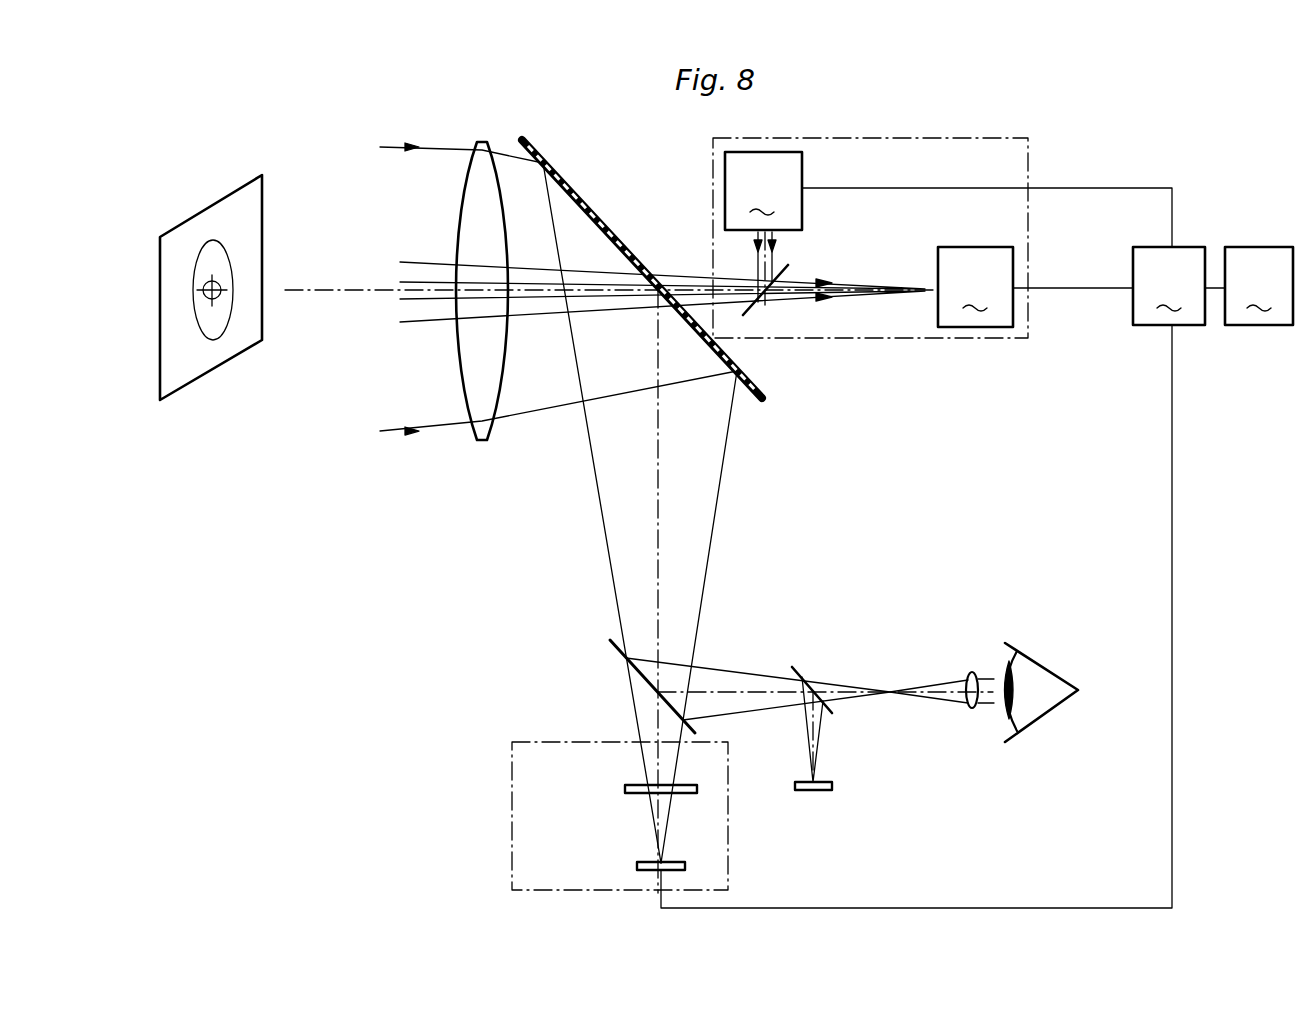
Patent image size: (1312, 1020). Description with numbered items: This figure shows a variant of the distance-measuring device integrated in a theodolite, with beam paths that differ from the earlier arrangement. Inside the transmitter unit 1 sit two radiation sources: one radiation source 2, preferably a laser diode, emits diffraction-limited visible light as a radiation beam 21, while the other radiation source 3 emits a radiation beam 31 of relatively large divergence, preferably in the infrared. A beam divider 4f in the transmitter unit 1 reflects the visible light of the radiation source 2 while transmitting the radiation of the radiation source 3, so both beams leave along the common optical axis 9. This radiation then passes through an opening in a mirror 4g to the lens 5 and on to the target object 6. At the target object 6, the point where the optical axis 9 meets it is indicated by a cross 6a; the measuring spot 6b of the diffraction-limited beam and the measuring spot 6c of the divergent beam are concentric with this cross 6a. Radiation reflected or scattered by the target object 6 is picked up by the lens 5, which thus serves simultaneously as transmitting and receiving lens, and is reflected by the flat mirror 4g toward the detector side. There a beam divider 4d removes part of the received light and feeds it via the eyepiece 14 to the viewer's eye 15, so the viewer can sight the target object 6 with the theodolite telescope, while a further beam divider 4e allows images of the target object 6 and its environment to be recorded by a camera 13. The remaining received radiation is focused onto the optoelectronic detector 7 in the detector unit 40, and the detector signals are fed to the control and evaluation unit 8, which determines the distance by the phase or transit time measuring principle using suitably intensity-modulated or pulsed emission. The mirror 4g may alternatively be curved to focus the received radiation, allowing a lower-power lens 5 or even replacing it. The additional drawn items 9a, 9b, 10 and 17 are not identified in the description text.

The transmitter unit 1 is at (1030, 153).
The radiation source 2 is at (948, 199).
The radiation source 3 is at (1035, 287).
The beam divider 4d is at (652, 686).
The beam divider 4e is at (798, 668).
The beam divider 4f is at (788, 267).
The mirror 4g is at (590, 208).
The lens 5 is at (463, 201).
The target object 6 is at (204, 213).
The cross 6a is at (212, 278).
The measuring spot 6b is at (213, 299).
The measuring spot 6c is at (208, 336).
The optoelectronic detector 7 is at (642, 860).
The control and evaluation unit 8 is at (943, 577).
The optical axis 9 is at (327, 293).
The measuring beam 9a is at (362, 290).
The measuring beam 9b is at (637, 278).
The filter 10 is at (640, 784).
The camera 13 is at (797, 788).
The eyepiece 14 is at (967, 678).
The viewer's eye 15 is at (1050, 672).
The display unit 17 is at (1259, 286).
The radiation beam 21 is at (758, 268).
The radiation beam 31 is at (838, 299).
The detector unit 40 is at (511, 822).